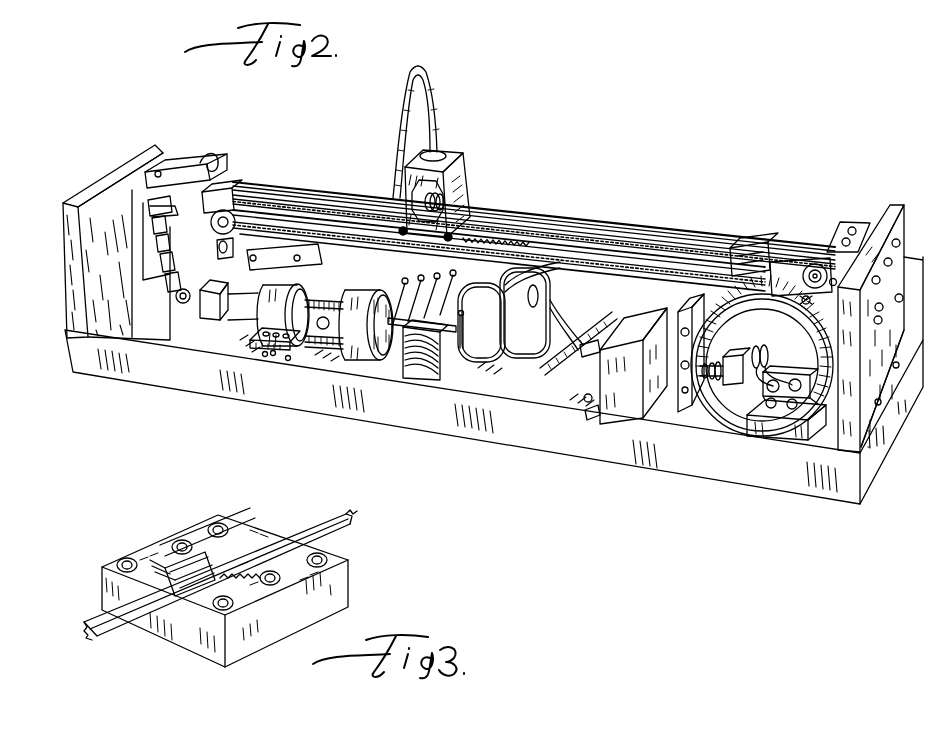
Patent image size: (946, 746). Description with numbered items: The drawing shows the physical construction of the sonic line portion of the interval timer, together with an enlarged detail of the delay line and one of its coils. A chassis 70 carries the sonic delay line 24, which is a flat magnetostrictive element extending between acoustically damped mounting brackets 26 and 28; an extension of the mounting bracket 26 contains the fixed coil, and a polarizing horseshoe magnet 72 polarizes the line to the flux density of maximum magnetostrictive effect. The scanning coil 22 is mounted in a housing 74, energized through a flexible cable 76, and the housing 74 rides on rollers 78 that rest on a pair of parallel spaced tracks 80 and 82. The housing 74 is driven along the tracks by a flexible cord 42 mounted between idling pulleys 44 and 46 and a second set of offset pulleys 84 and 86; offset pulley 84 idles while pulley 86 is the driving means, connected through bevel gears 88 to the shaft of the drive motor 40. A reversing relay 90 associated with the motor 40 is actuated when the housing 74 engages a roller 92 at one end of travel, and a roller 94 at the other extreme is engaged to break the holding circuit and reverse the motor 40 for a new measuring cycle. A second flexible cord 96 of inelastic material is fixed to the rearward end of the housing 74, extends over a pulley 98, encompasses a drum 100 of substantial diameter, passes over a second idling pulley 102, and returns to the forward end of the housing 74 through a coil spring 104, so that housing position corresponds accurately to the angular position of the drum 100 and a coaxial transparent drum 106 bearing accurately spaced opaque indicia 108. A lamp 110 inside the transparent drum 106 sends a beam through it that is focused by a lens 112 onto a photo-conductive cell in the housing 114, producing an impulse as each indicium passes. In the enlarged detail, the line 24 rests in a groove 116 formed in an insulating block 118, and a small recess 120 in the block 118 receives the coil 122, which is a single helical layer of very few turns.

In FIG. 2, the chassis 70 is at (195, 429).
In FIG. 2, the mounting bracket 26 is at (190, 168).
In FIG. 2, the mounting bracket 28 is at (868, 224).
In FIG. 2, the polarizing horseshoe magnet 72 is at (210, 160).
In FIG. 2, the idling pulley 44 is at (228, 192).
In FIG. 2, the track 80 is at (632, 226).
In FIG. 2, the roller 92 is at (594, 215).
In FIG. 2, the roller 94 is at (236, 193).
In FIG. 2, the flexible cord 42 is at (277, 200).
In FIG. 2, the track 82 is at (673, 255).
In FIG. 2, the second flexible cord 96 is at (320, 224).
In FIG. 2, the coil spring 104 is at (514, 240).
In FIG. 2, the sonic delay line 24 is at (508, 208).
In FIG. 3, the sonic delay line 24 is at (312, 518).
In FIG. 2, the pulley 98 is at (266, 246).
In FIG. 2, the housing 74 is at (463, 152).
In FIG. 2, the scanning coil 22 is at (453, 220).
In FIG. 2, the rollers 78 is at (401, 228).
In FIG. 2, the flexible cable 76 is at (401, 108).
In FIG. 2, the drive motor 40 is at (328, 368).
In FIG. 2, the reversing relay 90 is at (404, 382).
In FIG. 2, the housing 114 is at (628, 390).
In FIG. 2, the lens 112 is at (680, 412).
In FIG. 2, the transparent drum 106 is at (762, 356).
In FIG. 2, the opaque indicia 108 is at (774, 365).
In FIG. 2, the lamp 110 is at (708, 402).
In FIG. 2, the idling pulley 46 is at (758, 252).
In FIG. 2, the offset pulley 84 is at (788, 270).
In FIG. 2, the drum 100 is at (810, 303).
In FIG. 2, the second idling pulley 102 is at (838, 280).
In FIG. 2, the offset pulley 86 is at (155, 238).
In FIG. 2, the bevel gears 88 is at (178, 296).
In FIG. 3, the insulating block 118 is at (331, 597).
In FIG. 3, the groove 116 is at (272, 538).
In FIG. 3, the coil 122 is at (193, 570).
In FIG. 3, the recess 120 is at (222, 582).